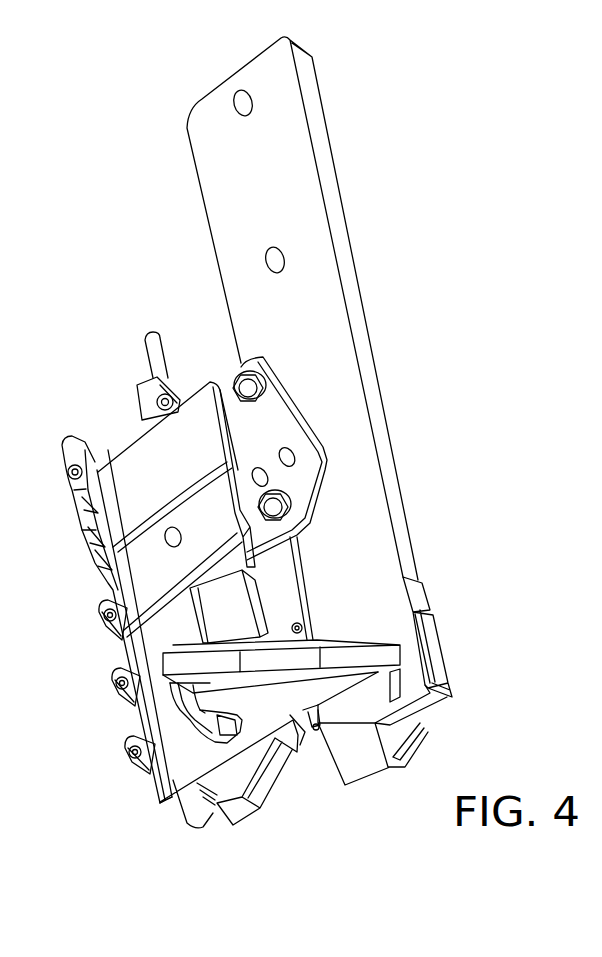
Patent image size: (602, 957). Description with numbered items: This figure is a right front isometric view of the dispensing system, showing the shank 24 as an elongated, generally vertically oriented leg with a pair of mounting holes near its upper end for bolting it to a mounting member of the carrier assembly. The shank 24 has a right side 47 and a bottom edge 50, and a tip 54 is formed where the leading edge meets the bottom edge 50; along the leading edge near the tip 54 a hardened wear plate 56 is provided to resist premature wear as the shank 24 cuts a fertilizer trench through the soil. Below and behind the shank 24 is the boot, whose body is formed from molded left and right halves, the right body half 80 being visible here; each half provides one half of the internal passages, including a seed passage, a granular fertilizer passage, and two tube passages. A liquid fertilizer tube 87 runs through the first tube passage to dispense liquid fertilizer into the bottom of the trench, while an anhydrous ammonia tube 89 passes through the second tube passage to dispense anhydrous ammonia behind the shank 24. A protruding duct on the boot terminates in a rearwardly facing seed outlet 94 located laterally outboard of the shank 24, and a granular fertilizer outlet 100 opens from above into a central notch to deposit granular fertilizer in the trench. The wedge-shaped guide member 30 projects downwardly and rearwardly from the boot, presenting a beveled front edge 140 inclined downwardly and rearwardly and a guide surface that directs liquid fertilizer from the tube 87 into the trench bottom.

The shank 24 is at (345, 151).
The right side 47 is at (320, 268).
The liquid fertilizer tube 87 is at (153, 358).
The right body half 80 is at (140, 572).
The hardened wear plate 56 is at (433, 648).
The tip 54 is at (461, 697).
The bottom edge 50 is at (428, 708).
The seed outlet 94 is at (178, 717).
The guide member 30 is at (233, 787).
The granular fertilizer outlet 100 is at (177, 810).
The beveled front edge 140 is at (273, 793).
The anhydrous ammonia tube 89 is at (328, 737).